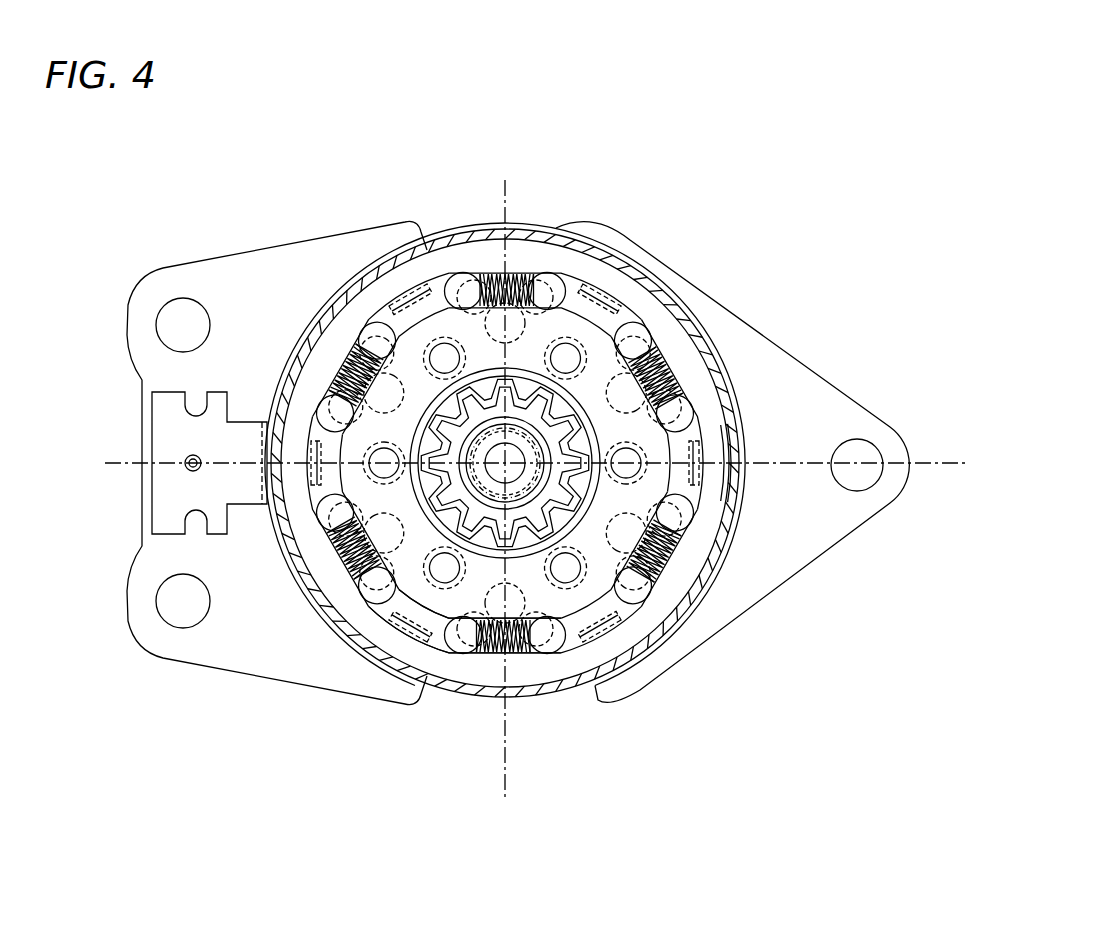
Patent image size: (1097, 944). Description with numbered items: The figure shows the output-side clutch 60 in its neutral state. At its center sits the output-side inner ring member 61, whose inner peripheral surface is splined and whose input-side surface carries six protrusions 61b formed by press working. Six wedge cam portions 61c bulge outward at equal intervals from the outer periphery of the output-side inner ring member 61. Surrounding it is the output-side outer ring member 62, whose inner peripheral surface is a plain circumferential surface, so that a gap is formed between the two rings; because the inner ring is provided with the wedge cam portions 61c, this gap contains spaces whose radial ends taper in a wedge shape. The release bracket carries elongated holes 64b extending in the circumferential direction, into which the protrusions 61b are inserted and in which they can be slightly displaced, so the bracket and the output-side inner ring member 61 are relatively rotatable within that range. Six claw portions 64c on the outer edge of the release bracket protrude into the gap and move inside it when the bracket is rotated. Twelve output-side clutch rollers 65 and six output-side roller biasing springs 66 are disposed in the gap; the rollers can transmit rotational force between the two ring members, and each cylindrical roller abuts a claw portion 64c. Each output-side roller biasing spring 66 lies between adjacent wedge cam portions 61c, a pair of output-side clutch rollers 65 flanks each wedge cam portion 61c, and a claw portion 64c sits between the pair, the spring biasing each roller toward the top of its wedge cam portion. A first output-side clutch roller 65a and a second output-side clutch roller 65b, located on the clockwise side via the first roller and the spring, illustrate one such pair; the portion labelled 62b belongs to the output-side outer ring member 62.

The output-side clutch 60 is at (322, 283).
The output-side inner ring member 61 is at (583, 330).
The protrusions 61b is at (440, 578).
The wedge cam portions 61c is at (497, 658).
The output-side outer ring member 62 is at (393, 288).
The engagement portion of bracket 62b is at (713, 493).
The elongated holes 64b is at (425, 576).
The claw portions 64c is at (600, 630).
The output-side clutch rollers 65 is at (366, 596).
The first output-side clutch roller 65a is at (462, 280).
The second output-side clutch roller 65b is at (553, 280).
The output-side roller biasing springs 66 is at (515, 283).